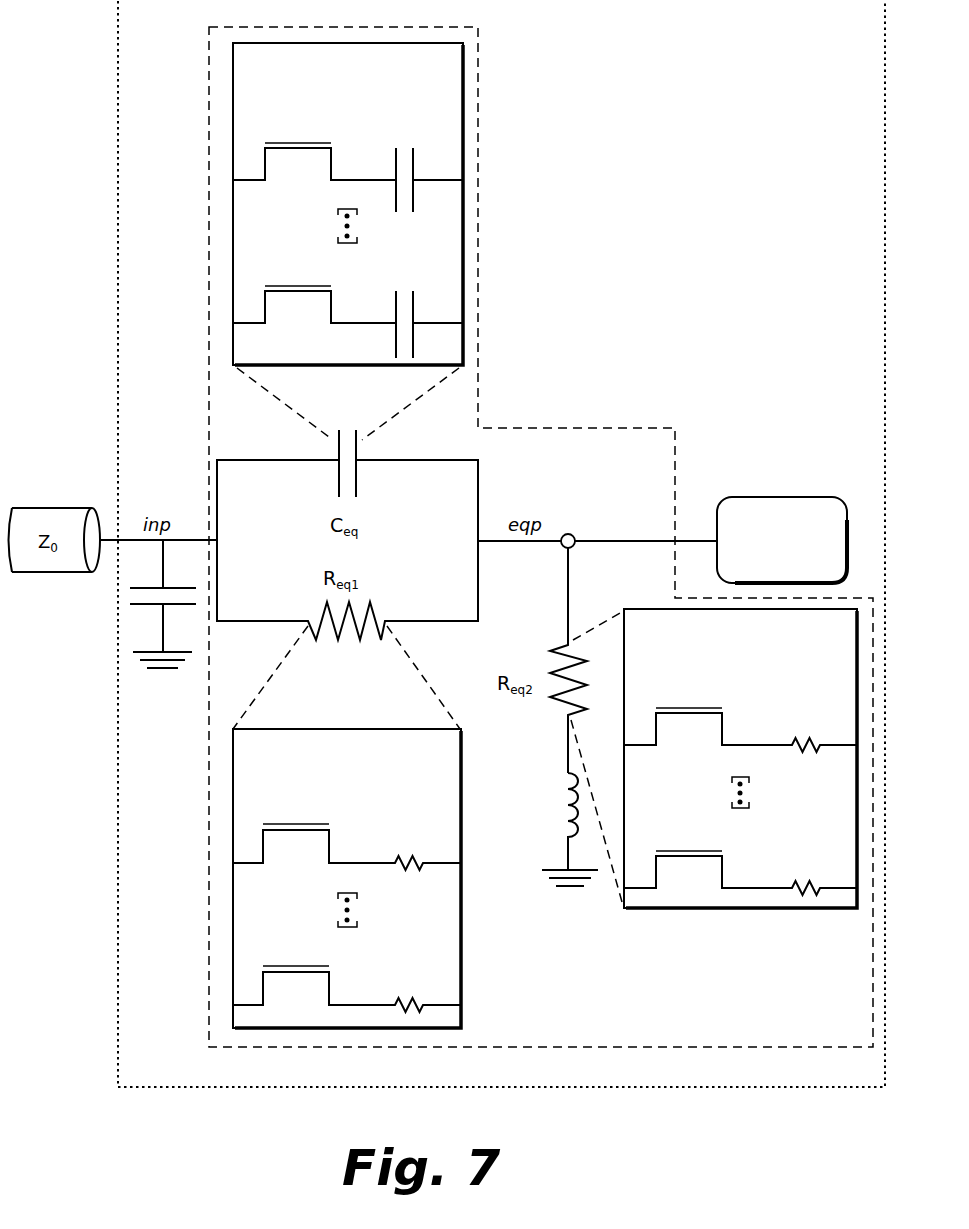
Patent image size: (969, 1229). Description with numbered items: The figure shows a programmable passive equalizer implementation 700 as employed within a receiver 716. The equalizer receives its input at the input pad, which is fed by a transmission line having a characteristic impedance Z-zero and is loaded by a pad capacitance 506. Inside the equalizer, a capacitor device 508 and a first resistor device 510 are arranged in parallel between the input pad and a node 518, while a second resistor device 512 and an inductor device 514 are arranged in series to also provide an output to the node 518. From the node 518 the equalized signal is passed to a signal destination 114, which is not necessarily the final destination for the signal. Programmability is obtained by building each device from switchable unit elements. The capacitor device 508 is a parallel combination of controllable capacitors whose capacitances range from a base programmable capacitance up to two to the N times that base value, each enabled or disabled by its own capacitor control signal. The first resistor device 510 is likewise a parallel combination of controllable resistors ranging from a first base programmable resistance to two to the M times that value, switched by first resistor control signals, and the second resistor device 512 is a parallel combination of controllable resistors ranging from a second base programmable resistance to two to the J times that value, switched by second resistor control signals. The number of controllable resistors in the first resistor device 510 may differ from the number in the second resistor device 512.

The receiver 716 is at (565, 22).
The programmable passive equalizer implementation 700 is at (548, 428).
The capacitor device 508 is at (397, 95).
The pad capacitance 506 is at (130, 637).
The first resistor device 510 is at (397, 781).
The node 518 is at (568, 533).
The signal destination 114 is at (800, 578).
The inductor device 514 is at (553, 770).
The second resistor device 512 is at (790, 661).